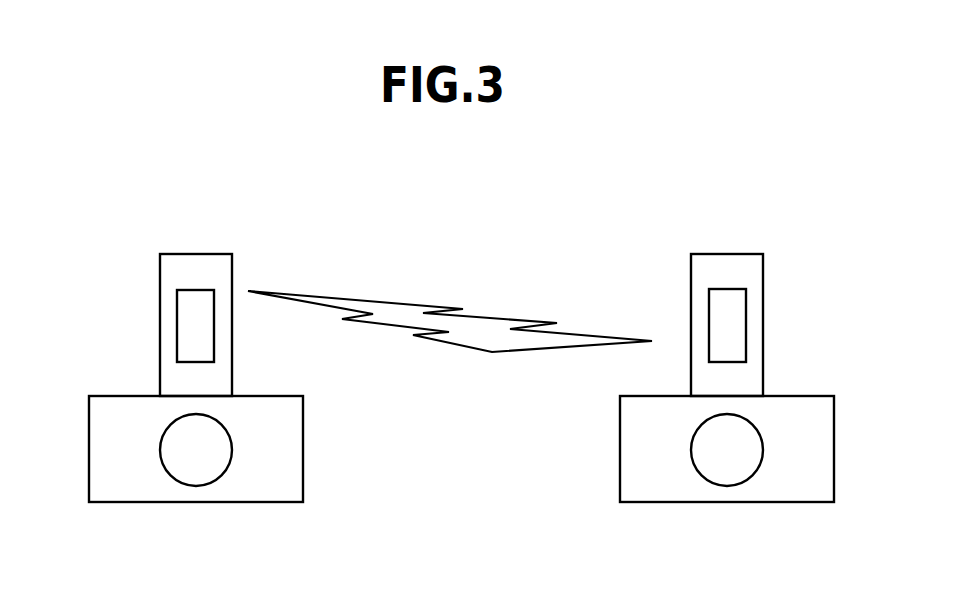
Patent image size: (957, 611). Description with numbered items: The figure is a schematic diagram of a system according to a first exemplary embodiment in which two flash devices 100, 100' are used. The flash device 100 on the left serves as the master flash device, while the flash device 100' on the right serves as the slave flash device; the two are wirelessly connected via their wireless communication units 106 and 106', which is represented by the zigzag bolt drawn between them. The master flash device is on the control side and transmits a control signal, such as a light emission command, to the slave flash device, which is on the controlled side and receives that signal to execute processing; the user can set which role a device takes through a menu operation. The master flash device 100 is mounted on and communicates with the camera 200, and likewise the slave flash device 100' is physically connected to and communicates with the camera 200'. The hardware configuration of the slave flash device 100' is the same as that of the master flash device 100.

The flash device 100 is at (196, 297).
The wireless communication unit 106 is at (148, 326).
The camera 200 is at (196, 477).
The flash device 100' is at (727, 297).
The wireless communication unit 106' is at (773, 325).
The camera 200' is at (727, 477).